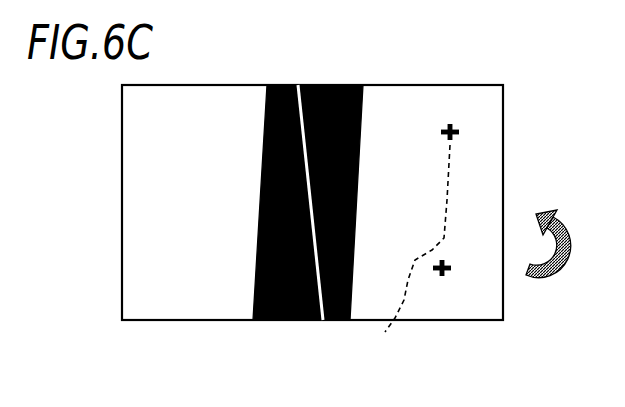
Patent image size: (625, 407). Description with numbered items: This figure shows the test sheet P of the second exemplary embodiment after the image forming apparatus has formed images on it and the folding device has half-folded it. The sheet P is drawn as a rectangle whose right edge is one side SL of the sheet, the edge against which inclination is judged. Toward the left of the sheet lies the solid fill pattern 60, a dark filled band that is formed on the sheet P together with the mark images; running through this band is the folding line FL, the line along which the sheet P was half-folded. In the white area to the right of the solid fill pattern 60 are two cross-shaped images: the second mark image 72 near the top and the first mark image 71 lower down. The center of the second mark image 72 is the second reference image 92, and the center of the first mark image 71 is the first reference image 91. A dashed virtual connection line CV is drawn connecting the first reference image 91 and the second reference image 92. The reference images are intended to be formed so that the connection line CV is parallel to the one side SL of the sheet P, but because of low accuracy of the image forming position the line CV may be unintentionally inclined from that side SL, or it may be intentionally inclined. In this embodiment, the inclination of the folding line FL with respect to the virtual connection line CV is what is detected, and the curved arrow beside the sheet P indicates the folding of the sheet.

The one side of the sheet SL is at (503, 290).
The solid fill pattern 60 is at (253, 280).
The folding line FL is at (298, 85).
The test sheet P is at (401, 85).
The virtual connection line CV is at (401, 254).
The second reference image 92 is at (446, 127).
The second mark image 72 is at (455, 129).
The first reference image 91 is at (436, 282).
The first mark image 71 is at (450, 282).